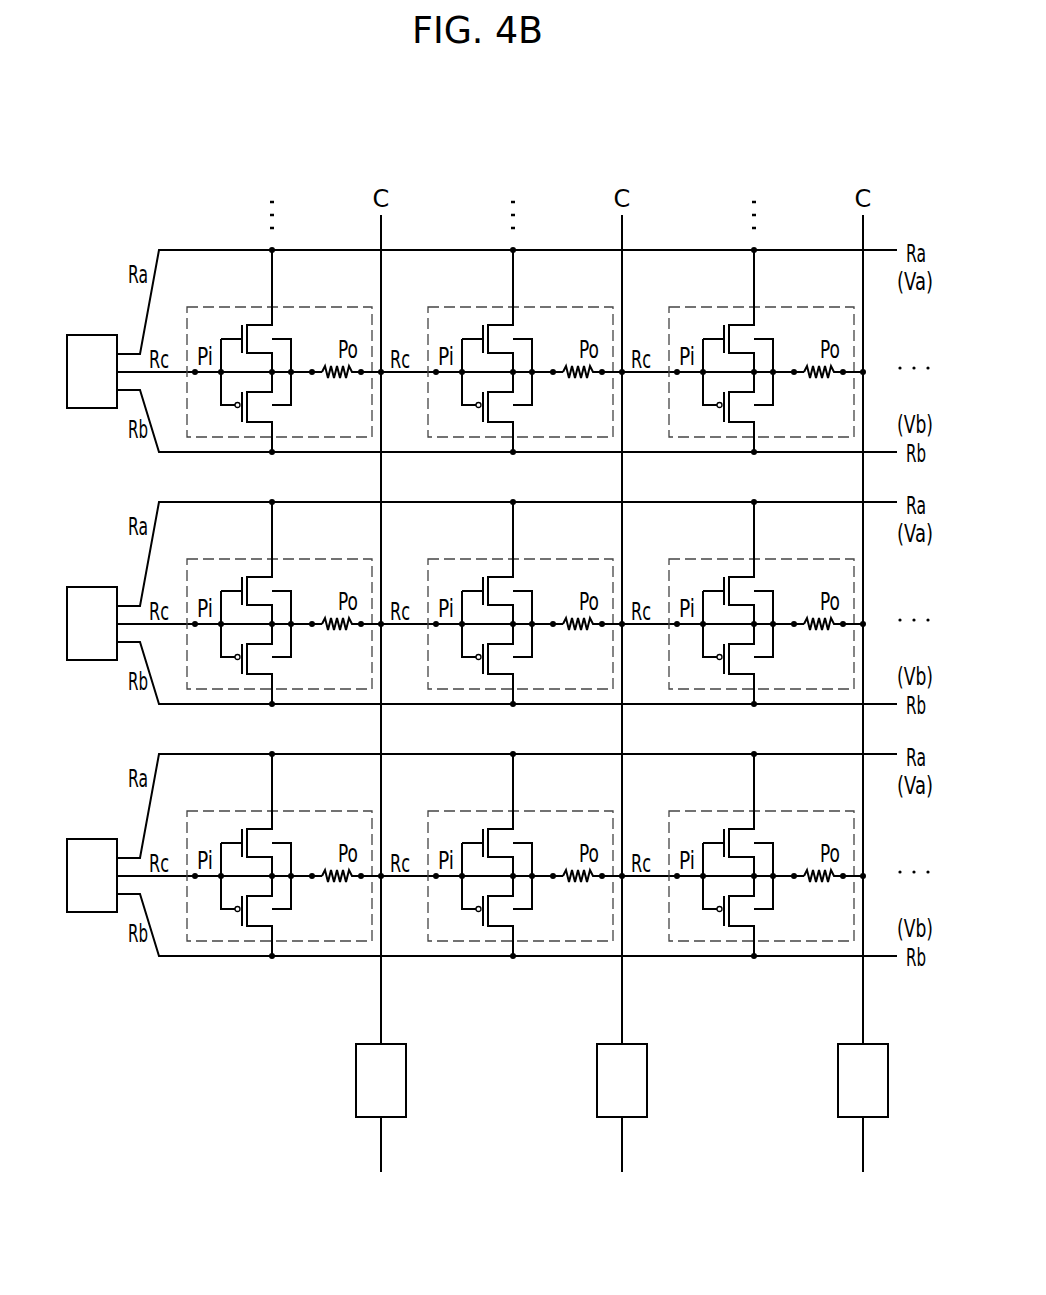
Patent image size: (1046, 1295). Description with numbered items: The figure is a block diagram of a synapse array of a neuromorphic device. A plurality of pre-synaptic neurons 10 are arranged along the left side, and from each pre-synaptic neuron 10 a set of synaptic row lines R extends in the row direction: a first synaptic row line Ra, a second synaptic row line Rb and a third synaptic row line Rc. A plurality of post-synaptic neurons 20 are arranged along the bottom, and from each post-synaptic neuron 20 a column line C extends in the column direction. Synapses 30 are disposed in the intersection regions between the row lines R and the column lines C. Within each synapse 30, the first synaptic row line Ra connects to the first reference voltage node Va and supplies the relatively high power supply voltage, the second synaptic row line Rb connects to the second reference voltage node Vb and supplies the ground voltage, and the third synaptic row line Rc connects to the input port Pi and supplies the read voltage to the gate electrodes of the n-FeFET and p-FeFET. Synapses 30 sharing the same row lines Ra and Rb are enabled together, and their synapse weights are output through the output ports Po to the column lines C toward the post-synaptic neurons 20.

The pre-synaptic neuron 10 is at (81, 384).
The post-synaptic neuron 20 is at (370, 1092).
The synapse 30 is at (210, 304).